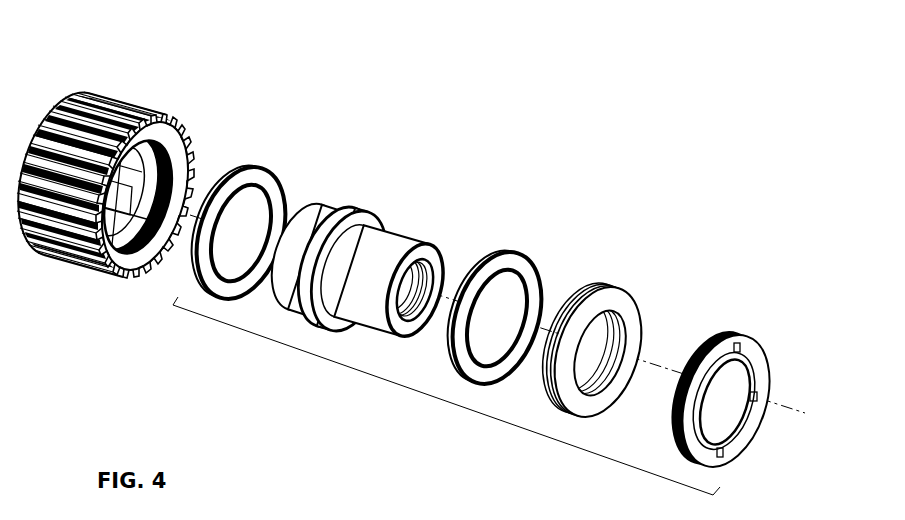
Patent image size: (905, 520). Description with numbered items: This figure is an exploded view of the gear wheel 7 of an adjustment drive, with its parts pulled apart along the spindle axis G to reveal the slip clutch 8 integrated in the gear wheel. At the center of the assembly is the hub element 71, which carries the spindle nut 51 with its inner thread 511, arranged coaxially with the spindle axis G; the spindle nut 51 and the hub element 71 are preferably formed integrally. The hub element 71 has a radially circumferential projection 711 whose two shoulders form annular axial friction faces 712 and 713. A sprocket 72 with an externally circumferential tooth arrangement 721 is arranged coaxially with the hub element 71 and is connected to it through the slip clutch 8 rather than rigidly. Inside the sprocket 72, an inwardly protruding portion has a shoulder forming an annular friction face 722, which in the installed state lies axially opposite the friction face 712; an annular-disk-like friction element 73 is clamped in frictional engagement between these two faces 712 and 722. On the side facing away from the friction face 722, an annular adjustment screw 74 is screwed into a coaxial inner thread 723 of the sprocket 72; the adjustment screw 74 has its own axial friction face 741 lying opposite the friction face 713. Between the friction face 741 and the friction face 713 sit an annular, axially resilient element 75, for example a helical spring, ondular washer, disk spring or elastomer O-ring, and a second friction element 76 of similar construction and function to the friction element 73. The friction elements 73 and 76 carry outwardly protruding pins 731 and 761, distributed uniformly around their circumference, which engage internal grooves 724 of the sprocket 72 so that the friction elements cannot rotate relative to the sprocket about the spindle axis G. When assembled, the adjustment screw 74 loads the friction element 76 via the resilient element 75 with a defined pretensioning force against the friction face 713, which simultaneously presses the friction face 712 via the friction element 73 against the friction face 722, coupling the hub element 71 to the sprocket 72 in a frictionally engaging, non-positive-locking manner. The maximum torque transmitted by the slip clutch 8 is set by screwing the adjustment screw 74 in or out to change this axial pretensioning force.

The gear wheel 7 is at (706, 98).
The slip clutch 8 is at (441, 406).
The spindle axis G is at (803, 424).
The sprocket 72 is at (160, 97).
The tooth arrangement 721 is at (140, 107).
The friction face 722 is at (170, 118).
The inner thread 723 is at (183, 146).
The internal grooves 724 is at (125, 277).
The friction element 73 is at (270, 165).
The pins 731 is at (232, 186).
The hub element 71 is at (391, 172).
The circumferential projection 711 is at (365, 211).
The friction face 712 is at (345, 212).
The friction face 713 is at (385, 207).
The spindle nut 51 is at (432, 241).
The inner thread 511 is at (420, 253).
The friction element 76 is at (521, 234).
The pins 761 is at (540, 328).
The resilient element 75 is at (611, 278).
The adjustment screw 74 is at (748, 343).
The friction face 741 is at (691, 347).